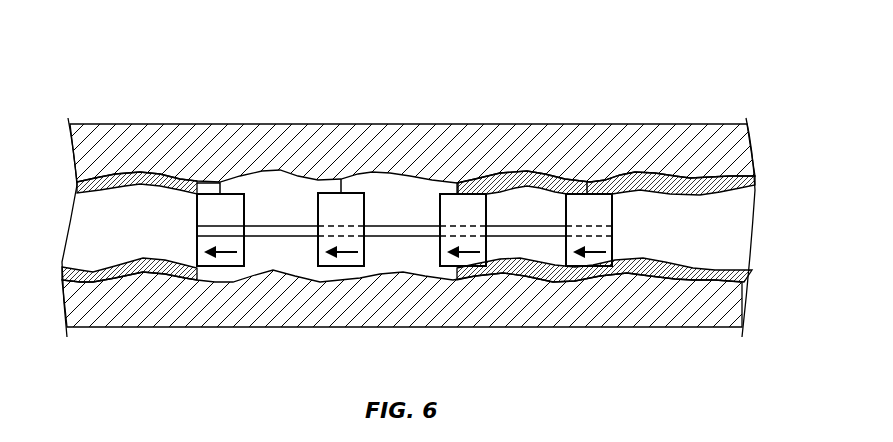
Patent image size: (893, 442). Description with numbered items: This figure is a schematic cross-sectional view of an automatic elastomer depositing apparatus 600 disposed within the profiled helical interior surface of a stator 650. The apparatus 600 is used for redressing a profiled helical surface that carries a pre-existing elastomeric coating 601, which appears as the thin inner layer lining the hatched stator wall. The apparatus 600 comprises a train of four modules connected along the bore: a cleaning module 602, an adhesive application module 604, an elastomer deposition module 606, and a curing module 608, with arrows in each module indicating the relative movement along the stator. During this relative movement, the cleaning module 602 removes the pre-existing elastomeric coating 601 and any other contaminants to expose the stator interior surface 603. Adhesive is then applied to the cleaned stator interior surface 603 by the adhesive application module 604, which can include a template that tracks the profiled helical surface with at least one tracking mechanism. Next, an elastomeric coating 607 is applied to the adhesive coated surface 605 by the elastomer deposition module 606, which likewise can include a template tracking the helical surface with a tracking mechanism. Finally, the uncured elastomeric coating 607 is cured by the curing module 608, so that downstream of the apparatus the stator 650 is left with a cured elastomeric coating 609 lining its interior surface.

The automatic elastomer depositing apparatus 600 is at (139, 38).
The pre-existing elastomeric coating 601 is at (143, 143).
The cleaning module 602 is at (220, 190).
The stator interior surface 603 is at (286, 226).
The adhesive application module 604 is at (341, 187).
The adhesive coated surface 605 is at (407, 226).
The elastomer deposition module 606 is at (463, 192).
The elastomeric coating 607 is at (520, 180).
The curing module 608 is at (587, 192).
The cured elastomeric coating 609 is at (653, 170).
The stator 650 is at (728, 147).